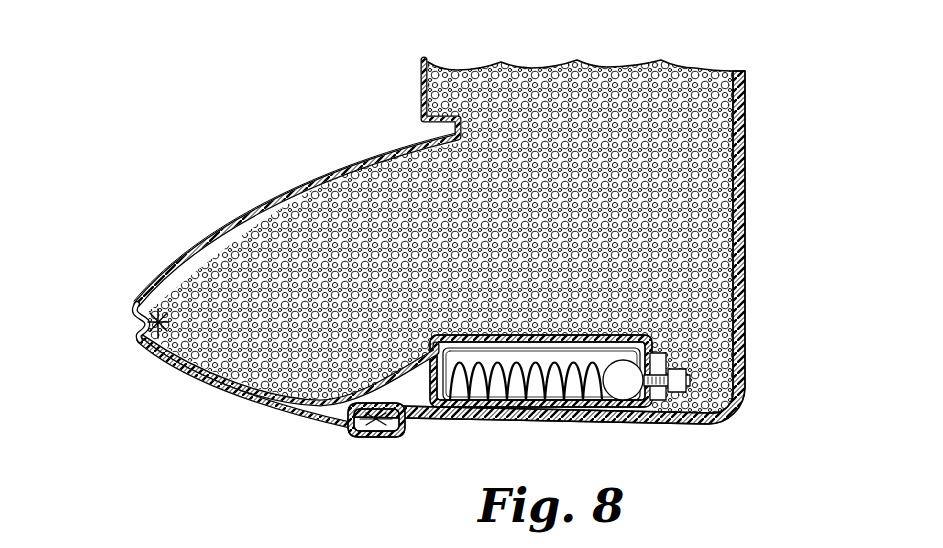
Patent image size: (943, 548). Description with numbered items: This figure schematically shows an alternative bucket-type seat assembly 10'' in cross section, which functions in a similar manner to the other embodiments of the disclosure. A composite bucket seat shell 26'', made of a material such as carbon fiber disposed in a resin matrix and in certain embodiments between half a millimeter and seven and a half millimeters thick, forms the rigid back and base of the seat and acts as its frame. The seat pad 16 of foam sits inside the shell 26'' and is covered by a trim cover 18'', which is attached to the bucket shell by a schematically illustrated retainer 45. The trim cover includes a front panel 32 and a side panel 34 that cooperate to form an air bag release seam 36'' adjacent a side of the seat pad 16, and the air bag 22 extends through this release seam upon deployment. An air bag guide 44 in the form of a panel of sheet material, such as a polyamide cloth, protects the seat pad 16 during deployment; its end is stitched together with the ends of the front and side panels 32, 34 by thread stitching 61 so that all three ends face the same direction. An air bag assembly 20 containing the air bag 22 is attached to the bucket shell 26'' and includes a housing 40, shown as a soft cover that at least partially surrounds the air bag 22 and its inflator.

The seat assembly 10'' is at (283, 46).
The seat pad 16 is at (432, 177).
The trim cover 18'' is at (297, 182).
The air bag assembly 20 is at (572, 336).
The air bag 22 is at (527, 363).
The composite bucket seat shell 26'' is at (589, 280).
The front panel 32 is at (220, 230).
The side panel 34 is at (163, 366).
The air bag release seam 36'' is at (92, 278).
The housing 40 is at (431, 362).
The air bag guide 44 is at (230, 384).
The retainer 45 is at (358, 430).
The stitching 61 is at (137, 302).